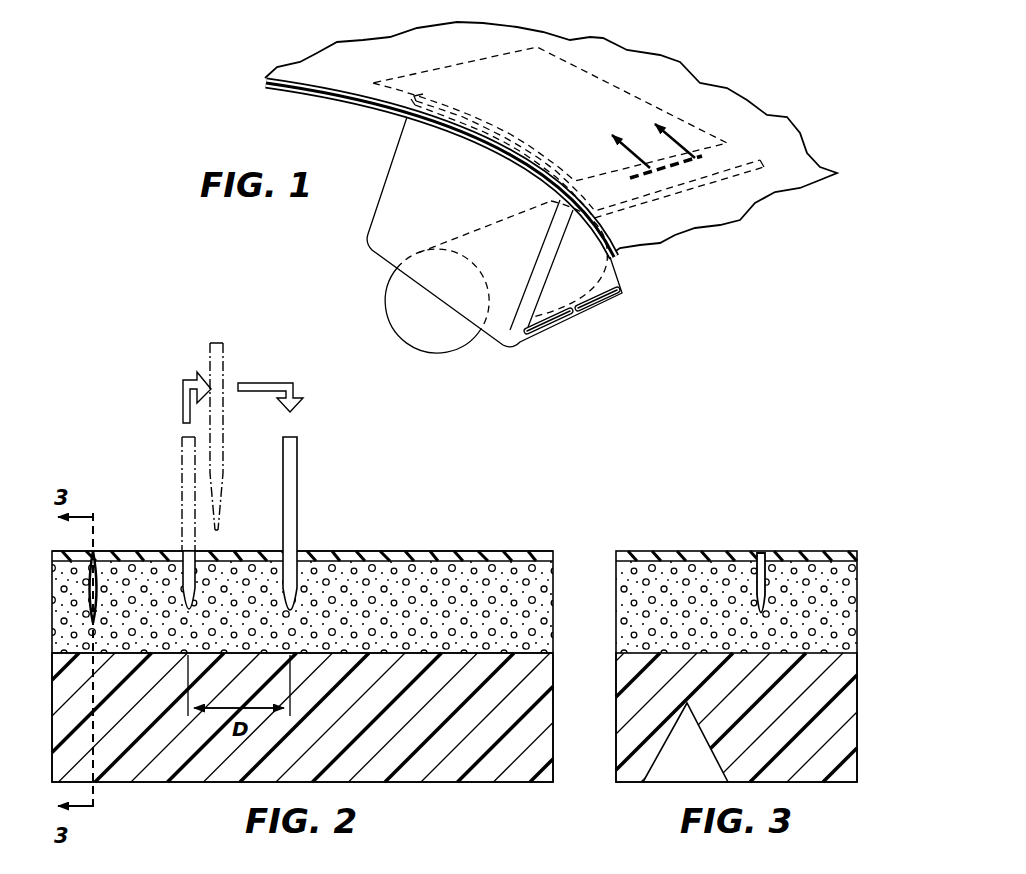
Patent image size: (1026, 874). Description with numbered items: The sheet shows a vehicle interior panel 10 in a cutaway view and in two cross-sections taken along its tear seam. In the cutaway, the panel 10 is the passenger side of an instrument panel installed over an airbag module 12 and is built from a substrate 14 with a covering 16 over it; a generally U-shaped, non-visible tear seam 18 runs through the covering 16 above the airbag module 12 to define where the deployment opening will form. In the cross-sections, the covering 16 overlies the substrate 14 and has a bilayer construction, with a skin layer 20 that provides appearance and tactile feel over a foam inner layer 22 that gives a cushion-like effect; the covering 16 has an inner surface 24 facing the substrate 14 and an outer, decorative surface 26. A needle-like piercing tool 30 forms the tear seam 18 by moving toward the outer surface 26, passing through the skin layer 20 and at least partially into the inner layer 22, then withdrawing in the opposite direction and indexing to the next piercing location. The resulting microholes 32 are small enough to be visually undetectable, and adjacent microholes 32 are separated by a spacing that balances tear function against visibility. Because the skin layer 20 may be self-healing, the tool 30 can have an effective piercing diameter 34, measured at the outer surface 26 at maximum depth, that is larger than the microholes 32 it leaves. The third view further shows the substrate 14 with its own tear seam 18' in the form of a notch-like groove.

In FIG. 1, the vehicle interior panel 10 is at (700, 27).
In FIG. 1, the airbag module 12 is at (398, 220).
In FIG. 1, the substrate 14 is at (322, 98).
In FIG. 2, the substrate 14 is at (497, 783).
In FIG. 3, the substrate 14 is at (848, 784).
In FIG. 1, the covering 16 is at (814, 177).
In FIG. 2, the covering 16 is at (516, 536).
In FIG. 3, the covering 16 is at (808, 524).
In FIG. 1, the tear seam 18 is at (568, 174).
In FIG. 2, the tear seam 18 is at (122, 632).
In FIG. 3, the tear seam 18' is at (697, 742).
In FIG. 2, the skin layer 20 is at (390, 551).
In FIG. 3, the skin layer 20 is at (685, 556).
In FIG. 2, the inner layer 22 is at (432, 565).
In FIG. 3, the inner layer 22 is at (640, 568).
In FIG. 2, the inner surface 24 is at (384, 656).
In FIG. 2, the outer surface 26 is at (478, 551).
In FIG. 2, the piercing tool 30 is at (298, 463).
In FIG. 2, the microholes 32 is at (186, 549).
In FIG. 3, the microholes 32 is at (762, 553).
In FIG. 2, the effective piercing diameter 34 is at (285, 549).